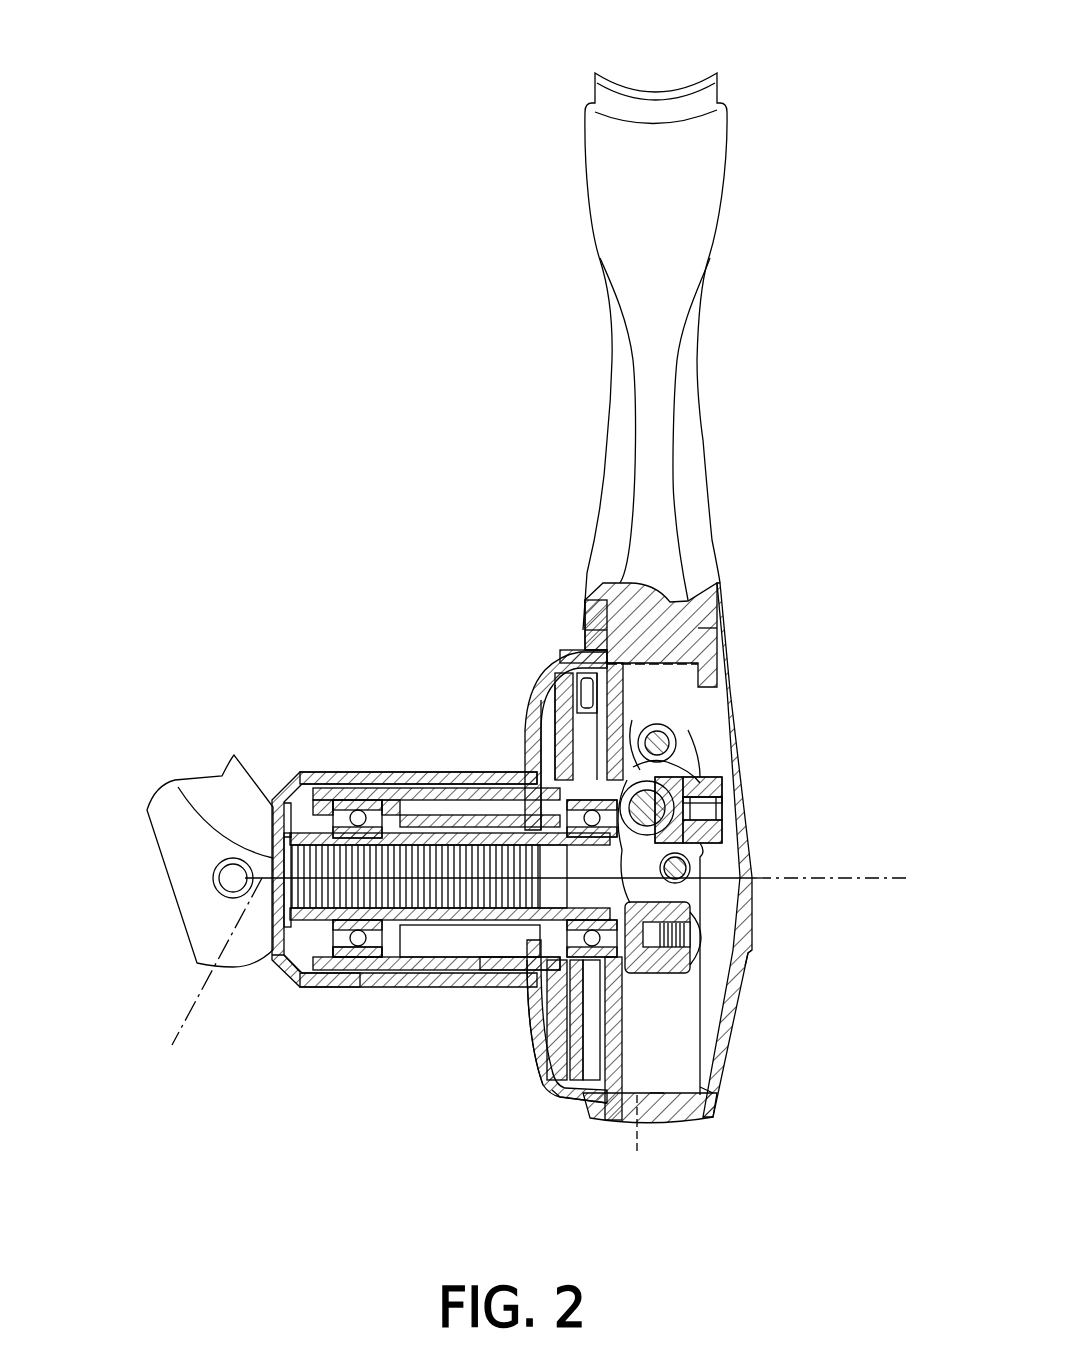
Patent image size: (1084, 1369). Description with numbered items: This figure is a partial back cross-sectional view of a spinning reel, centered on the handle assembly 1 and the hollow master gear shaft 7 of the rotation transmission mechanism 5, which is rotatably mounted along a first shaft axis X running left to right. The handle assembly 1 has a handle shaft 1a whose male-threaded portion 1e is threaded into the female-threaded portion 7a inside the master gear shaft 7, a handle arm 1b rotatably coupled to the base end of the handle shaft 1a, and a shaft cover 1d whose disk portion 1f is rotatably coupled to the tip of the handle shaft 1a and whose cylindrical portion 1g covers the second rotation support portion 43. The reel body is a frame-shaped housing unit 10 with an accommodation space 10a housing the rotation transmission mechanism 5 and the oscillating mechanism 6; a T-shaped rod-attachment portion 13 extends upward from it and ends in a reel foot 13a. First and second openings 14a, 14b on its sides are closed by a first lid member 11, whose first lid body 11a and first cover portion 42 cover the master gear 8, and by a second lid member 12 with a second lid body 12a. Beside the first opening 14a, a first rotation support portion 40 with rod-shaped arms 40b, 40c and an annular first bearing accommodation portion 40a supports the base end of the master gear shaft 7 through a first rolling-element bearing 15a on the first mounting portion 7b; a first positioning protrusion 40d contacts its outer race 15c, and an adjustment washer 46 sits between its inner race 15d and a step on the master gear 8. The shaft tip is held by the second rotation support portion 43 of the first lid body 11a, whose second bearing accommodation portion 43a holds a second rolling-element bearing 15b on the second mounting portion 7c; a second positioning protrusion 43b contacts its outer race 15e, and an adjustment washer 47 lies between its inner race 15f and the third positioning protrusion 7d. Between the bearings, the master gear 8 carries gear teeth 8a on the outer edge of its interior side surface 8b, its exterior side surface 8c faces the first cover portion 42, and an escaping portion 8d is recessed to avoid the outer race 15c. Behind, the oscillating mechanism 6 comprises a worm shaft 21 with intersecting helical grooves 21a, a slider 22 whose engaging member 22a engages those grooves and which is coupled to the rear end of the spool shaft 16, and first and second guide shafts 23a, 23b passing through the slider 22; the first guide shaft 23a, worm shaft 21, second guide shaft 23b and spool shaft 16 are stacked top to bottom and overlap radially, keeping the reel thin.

The handle assembly 1 is at (192, 967).
The handle shaft 1a is at (287, 968).
The handle arm 1b is at (178, 885).
The shaft cover 1d is at (335, 768).
The male-threaded portion 1e is at (228, 772).
The disk portion 1f is at (267, 957).
The cylindrical portion 1g is at (340, 770).
The rotation transmission mechanism 5 is at (523, 700).
The oscillating mechanism 6 is at (725, 840).
The master gear shaft 7 is at (421, 828).
The female-threaded portion 7a is at (413, 918).
The first mounting portion 7b is at (503, 763).
The second mounting portion 7c is at (288, 830).
The third positioning protrusion 7d is at (352, 785).
The master gear 8 is at (533, 1083).
The gear teeth 8a is at (598, 1105).
The interior side surface 8b is at (575, 695).
The exterior side surface 8c is at (545, 672).
The escaping portion 8d is at (440, 800).
The housing unit 10 is at (692, 648).
The accommodation space 10a is at (690, 997).
The first lid member 11 is at (512, 715).
The first lid body 11a is at (555, 1085).
The second lid member 12 is at (752, 755).
The second lid body 12a is at (740, 983).
The rod-attachment portion 13 is at (703, 345).
The reel foot 13a is at (683, 92).
The first opening 14a is at (640, 1141).
The second opening 14b is at (700, 1087).
The first rolling-element bearing 15a is at (541, 1058).
The second rolling-element bearing 15b is at (345, 960).
The outer race 15c is at (705, 780).
The inner race 15d is at (485, 975).
The outer race 15e is at (305, 960).
The inner race 15f is at (183, 807).
The spool shaft 16 is at (660, 950).
The worm shaft 21 is at (680, 850).
The helical grooves 21a is at (660, 1093).
The slider 22 is at (702, 860).
The engaging member 22a is at (735, 803).
The first guide shaft 23a is at (672, 735).
The second guide shaft 23b is at (690, 872).
The first rotation support portion 40 is at (608, 660).
The first bearing accommodation portion 40a is at (598, 655).
The arm 40b is at (615, 790).
The arm 40c is at (610, 1105).
The first positioning protrusion 40d is at (682, 1092).
The first cover portion 42 is at (500, 768).
The second rotation support portion 43 is at (445, 960).
The second bearing accommodation portion 43a is at (350, 970).
The second positioning protrusion 43b is at (330, 812).
The adjustment washer 46 is at (470, 940).
The adjustment washer 47 is at (366, 948).
The first shaft axis X is at (207, 987).